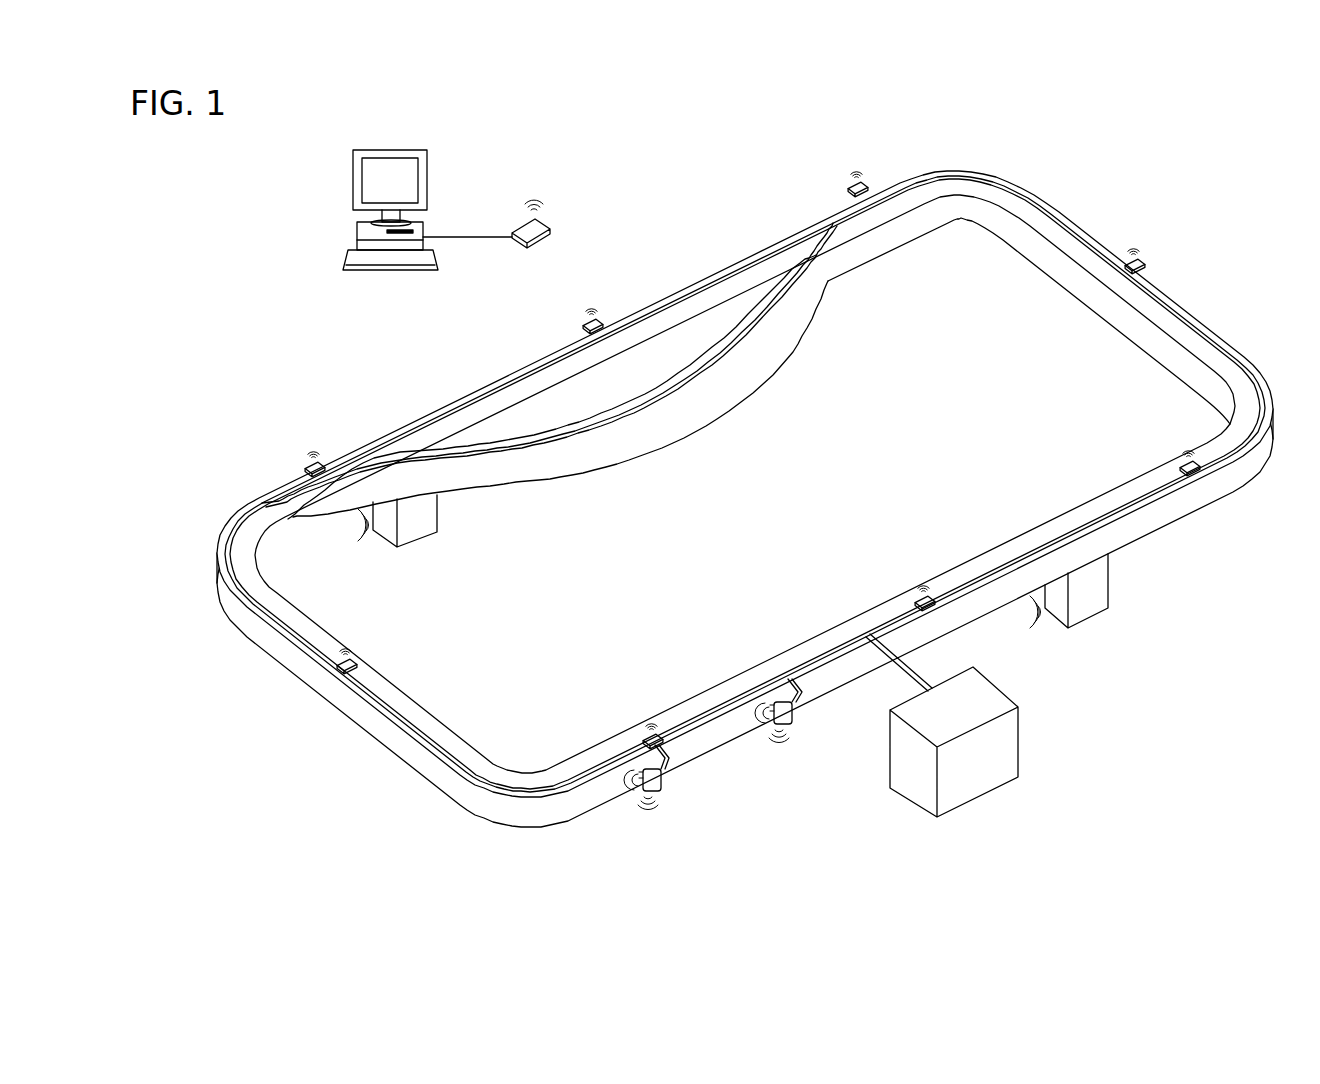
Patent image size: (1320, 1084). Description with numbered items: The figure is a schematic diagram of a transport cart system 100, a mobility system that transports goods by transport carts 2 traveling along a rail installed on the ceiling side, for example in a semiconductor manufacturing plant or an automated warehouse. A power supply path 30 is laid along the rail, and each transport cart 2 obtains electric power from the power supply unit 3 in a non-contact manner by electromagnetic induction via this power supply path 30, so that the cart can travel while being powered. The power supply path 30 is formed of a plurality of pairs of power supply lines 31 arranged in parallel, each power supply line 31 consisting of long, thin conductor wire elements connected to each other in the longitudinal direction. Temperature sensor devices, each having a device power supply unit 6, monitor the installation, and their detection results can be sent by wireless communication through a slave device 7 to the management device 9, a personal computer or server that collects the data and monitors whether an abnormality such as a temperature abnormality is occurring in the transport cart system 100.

The transport cart system 100 is at (700, 534).
The power supply path 30 is at (419, 762).
The power supply line 31 is at (212, 552).
The slave device 7 is at (1150, 258).
The device power supply unit 6 is at (793, 712).
The transport cart 2 is at (420, 516).
The power supply unit 3 is at (917, 782).
The management device 9 is at (352, 192).